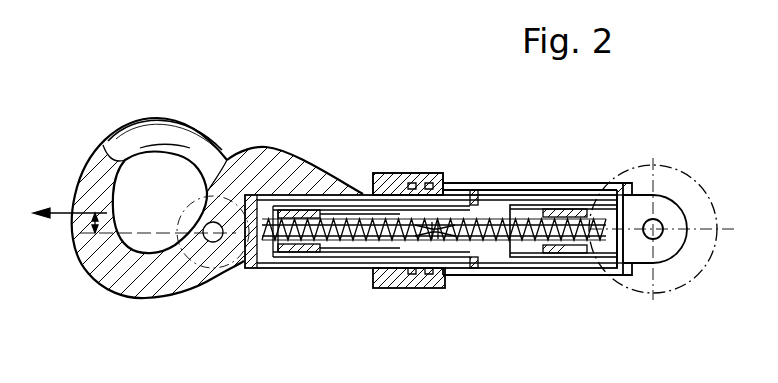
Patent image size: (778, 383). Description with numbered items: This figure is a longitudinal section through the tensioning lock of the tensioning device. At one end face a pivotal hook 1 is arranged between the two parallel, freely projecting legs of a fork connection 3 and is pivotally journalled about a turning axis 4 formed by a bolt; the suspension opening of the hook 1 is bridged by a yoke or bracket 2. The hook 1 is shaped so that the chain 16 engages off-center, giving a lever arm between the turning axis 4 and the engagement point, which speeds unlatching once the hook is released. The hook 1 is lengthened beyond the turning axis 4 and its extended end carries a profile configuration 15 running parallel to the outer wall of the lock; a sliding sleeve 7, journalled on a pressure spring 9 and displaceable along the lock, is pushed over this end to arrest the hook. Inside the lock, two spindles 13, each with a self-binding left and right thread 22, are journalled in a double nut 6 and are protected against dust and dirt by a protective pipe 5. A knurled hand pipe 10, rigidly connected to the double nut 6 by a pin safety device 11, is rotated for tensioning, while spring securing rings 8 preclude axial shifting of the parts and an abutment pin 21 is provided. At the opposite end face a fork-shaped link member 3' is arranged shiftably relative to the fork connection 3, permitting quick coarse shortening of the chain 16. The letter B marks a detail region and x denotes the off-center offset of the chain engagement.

The pivotal hook 1 is at (145, 275).
The yoke or bracket 2 is at (178, 135).
The fork connection 3 is at (427, 273).
The fork-shaped link member 3' is at (654, 277).
The pivot or turning axis 4 is at (240, 180).
The protective pipe 5 is at (323, 185).
The double nut 6 is at (352, 270).
The sliding sleeve 7 is at (420, 178).
The spring securing rings 8 is at (393, 289).
The pressure spring 9 is at (453, 180).
The hand pipe 10 is at (588, 185).
The pin safety device 11 is at (483, 190).
The spindles 13 is at (323, 260).
The profile configuration 15 is at (373, 178).
The chain 16 is at (66, 202).
The abutment pin 21 is at (485, 270).
The self-binding left and right thread 22 is at (282, 258).
The pivot circle B is at (700, 188).
The offset dimension x is at (88, 223).